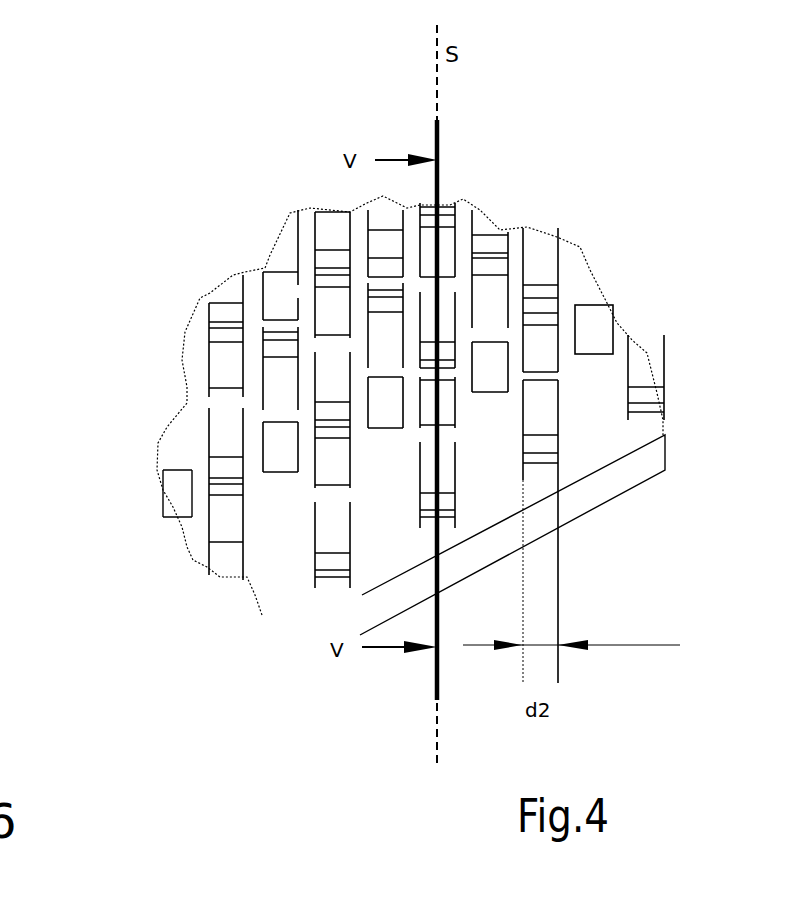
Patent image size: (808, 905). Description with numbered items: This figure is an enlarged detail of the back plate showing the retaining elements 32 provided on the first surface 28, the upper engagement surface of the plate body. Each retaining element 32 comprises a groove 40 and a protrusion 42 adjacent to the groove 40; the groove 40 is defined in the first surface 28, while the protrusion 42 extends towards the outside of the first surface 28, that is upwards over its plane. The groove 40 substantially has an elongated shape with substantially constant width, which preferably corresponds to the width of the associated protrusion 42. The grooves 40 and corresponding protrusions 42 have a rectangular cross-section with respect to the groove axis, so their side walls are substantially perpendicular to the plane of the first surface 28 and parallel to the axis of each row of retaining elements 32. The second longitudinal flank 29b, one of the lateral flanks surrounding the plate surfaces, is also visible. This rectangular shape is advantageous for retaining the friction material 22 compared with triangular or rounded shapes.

The friction material 22 is at (9, 214).
The first surface 28 is at (287, 583).
The second longitudinal flank 29b is at (593, 487).
The retaining element 32 is at (550, 409).
The groove 40 is at (227, 430).
The protrusion 42 is at (227, 465).